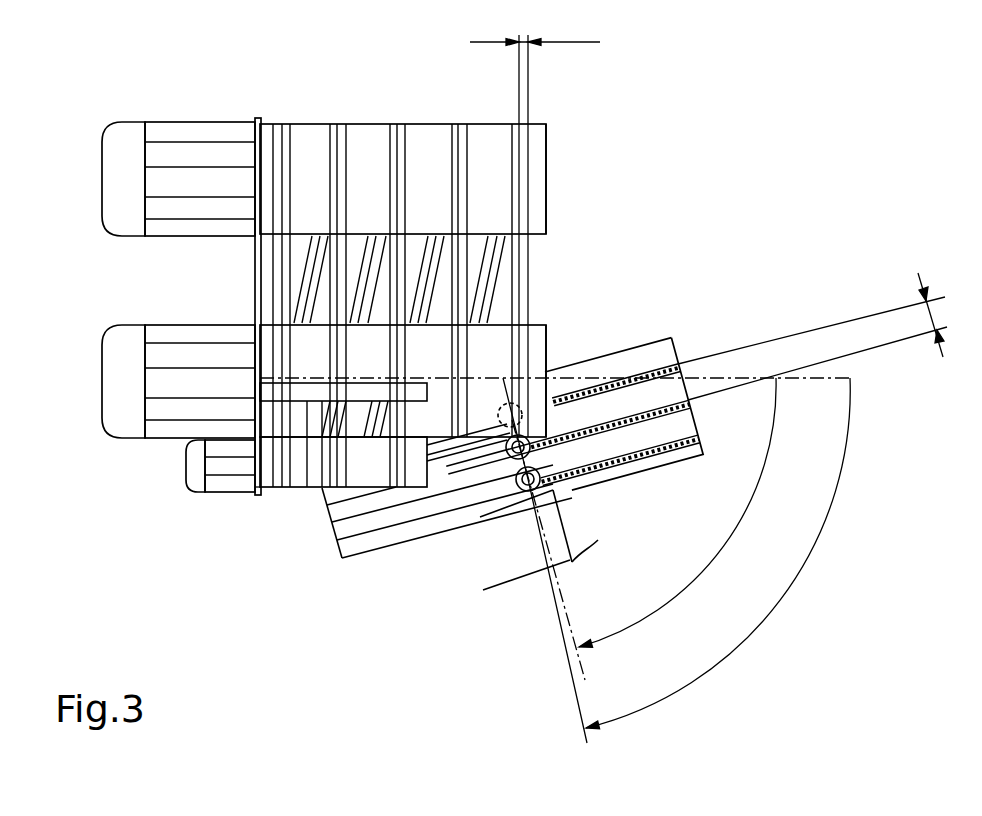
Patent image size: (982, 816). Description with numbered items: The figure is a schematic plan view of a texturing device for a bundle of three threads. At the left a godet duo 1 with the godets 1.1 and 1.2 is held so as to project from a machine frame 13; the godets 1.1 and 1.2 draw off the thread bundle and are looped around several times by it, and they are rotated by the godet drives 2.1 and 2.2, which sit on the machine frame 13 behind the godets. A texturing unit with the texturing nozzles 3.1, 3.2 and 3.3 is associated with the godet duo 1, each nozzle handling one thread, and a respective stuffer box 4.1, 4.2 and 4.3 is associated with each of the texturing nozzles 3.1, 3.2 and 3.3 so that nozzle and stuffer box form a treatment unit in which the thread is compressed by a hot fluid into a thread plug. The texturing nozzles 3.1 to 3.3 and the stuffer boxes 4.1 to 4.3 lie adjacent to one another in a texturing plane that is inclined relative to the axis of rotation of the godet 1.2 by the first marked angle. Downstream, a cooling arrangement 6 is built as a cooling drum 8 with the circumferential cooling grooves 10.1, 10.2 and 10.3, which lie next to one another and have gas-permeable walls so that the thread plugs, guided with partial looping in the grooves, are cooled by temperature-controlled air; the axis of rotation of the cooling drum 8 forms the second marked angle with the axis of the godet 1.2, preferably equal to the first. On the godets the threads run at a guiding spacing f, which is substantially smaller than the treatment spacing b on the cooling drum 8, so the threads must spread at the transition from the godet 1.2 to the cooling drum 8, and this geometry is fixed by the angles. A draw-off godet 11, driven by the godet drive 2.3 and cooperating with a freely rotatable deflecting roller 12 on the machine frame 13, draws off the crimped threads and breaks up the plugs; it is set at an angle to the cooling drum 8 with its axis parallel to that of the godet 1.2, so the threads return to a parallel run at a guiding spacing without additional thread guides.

The godet duo 1 is at (575, 241).
The godet 1.1 is at (305, 140).
The godet 1.2 is at (546, 150).
The godet drive 2.1 is at (118, 150).
The godet drive 2.2 is at (125, 345).
The godet drive 2.3 is at (192, 468).
The texturing nozzle 3.1 is at (518, 488).
The texturing nozzle 3.2 is at (506, 455).
The texturing nozzle 3.3 is at (498, 422).
The stuffer box 4.1 is at (531, 510).
The stuffer box 4.2 is at (540, 505).
The stuffer box 4.3 is at (529, 376).
The cooling arrangement 6 is at (668, 313).
The cooling drum 8 is at (656, 356).
The cooling groove 10.1 is at (795, 440).
The cooling groove 10.2 is at (790, 400).
The cooling groove 10.3 is at (778, 382).
The draw-off godet 11 is at (263, 493).
The deflecting roller 12 is at (290, 396).
The machine frame 13 is at (258, 118).
The guiding spacing f is at (535, 26).
The treatment spacing b is at (824, 336).